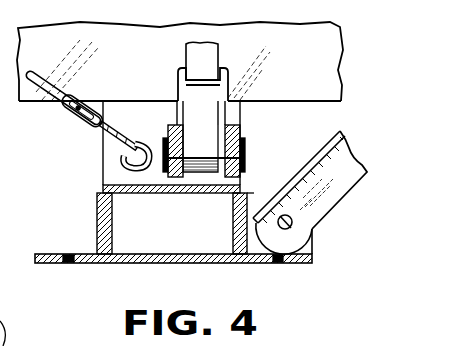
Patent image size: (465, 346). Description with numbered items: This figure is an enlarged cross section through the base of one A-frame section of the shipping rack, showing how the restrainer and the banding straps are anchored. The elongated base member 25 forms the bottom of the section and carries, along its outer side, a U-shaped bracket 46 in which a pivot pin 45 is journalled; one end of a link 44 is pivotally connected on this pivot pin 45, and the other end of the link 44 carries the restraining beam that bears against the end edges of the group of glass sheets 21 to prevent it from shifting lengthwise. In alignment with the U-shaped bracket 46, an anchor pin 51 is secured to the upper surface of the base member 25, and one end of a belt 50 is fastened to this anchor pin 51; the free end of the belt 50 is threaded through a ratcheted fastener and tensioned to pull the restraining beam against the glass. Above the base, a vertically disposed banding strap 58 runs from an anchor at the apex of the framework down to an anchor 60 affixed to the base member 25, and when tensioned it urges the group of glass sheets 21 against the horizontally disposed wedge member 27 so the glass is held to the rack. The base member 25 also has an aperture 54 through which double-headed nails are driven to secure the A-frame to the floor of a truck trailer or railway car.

The group of glass sheets 21 is at (171, 25).
The vertically disposed banding strap 58 is at (187, 46).
The horizontally disposed wedge member 27 is at (241, 115).
The anchor 60 is at (247, 153).
The belt 50 is at (62, 90).
The anchor pin 51 is at (118, 149).
The base member 25 is at (136, 261).
The aperture 54 is at (71, 254).
The U-shaped bracket 46 is at (258, 207).
The link 44 is at (348, 180).
The pivot pin 45 is at (292, 227).